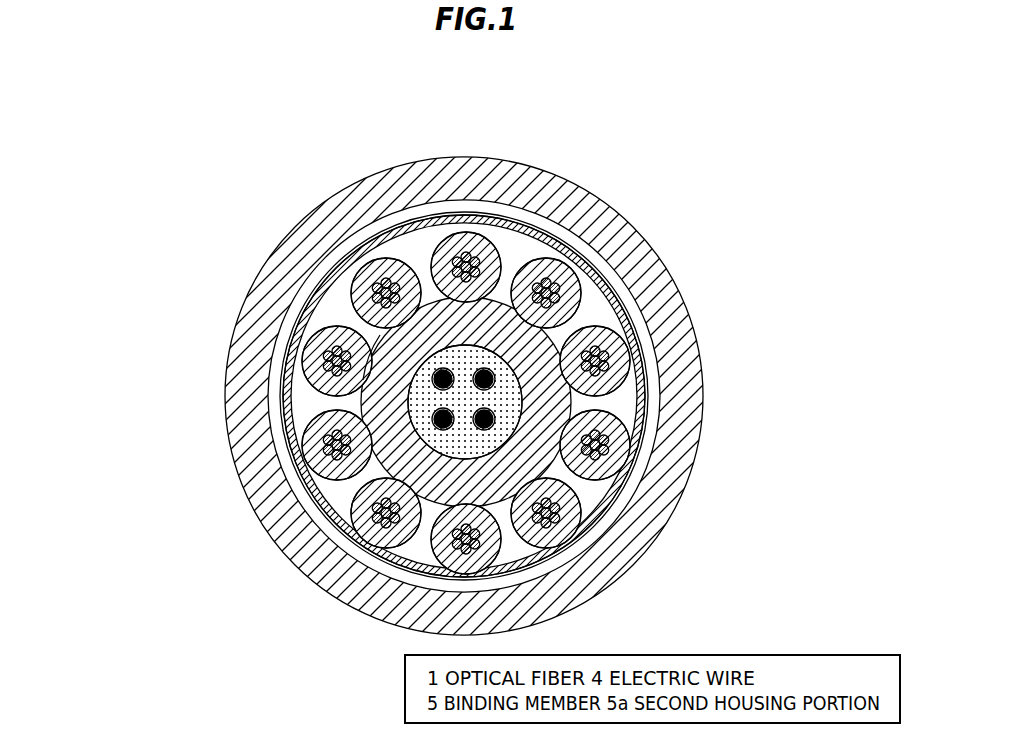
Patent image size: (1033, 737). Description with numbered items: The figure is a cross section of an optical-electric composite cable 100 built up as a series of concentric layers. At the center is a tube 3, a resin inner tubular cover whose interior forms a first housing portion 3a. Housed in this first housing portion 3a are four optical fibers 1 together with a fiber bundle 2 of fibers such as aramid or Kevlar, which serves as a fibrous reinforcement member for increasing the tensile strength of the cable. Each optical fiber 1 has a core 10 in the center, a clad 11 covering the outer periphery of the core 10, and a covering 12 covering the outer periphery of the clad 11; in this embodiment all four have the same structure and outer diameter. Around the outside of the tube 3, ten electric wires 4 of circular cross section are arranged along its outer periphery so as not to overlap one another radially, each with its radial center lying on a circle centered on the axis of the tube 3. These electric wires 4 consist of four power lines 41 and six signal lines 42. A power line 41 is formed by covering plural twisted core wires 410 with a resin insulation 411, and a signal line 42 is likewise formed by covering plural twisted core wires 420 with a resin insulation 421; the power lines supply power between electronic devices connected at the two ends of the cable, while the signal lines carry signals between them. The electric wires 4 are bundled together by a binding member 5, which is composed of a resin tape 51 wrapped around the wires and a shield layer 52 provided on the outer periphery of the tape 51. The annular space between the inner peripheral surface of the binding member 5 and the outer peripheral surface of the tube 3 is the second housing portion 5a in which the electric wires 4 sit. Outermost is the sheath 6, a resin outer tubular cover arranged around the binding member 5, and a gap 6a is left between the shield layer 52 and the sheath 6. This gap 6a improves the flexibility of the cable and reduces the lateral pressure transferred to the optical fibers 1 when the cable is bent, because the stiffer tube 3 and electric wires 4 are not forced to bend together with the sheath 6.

The optical-electric composite cable 100 is at (338, 175).
The optical fiber 1 is at (670, 350).
The core 10 is at (486, 378).
The clad 11 is at (492, 380).
The covering 12 is at (496, 384).
The fiber bundle 2 is at (638, 415).
The tube 3 is at (532, 458).
The first housing portion 3a is at (335, 317).
The electric wire 4 is at (719, 288).
The power line 41 is at (666, 212).
The core wire 410 is at (549, 290).
The insulation 411 is at (572, 280).
The signal line 42 is at (743, 445).
The core wire 420 is at (599, 443).
The insulation 421 is at (618, 455).
The binding member 5 is at (594, 396).
The tape 51 is at (627, 311).
The shield layer 52 is at (616, 318).
The second housing portion 5a is at (425, 387).
The sheath 6 is at (627, 245).
The gap 6a is at (278, 423).